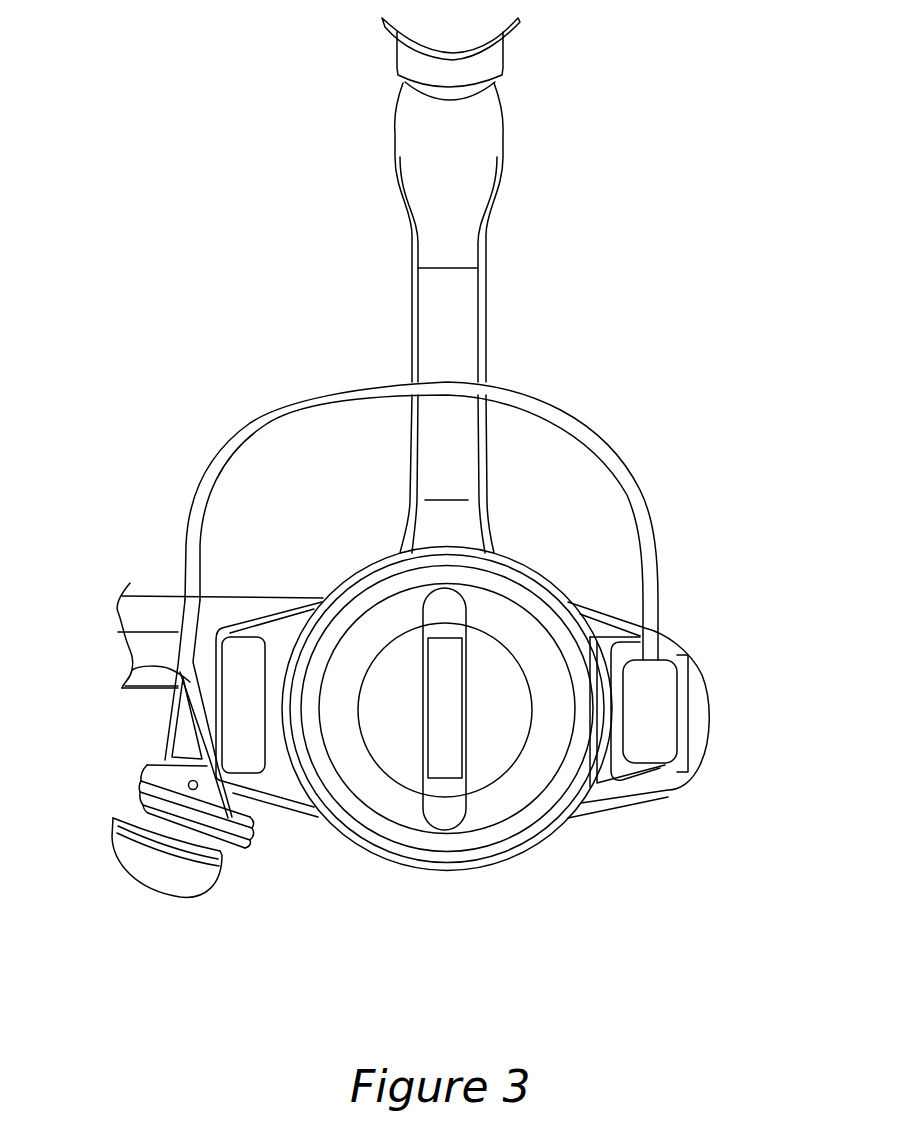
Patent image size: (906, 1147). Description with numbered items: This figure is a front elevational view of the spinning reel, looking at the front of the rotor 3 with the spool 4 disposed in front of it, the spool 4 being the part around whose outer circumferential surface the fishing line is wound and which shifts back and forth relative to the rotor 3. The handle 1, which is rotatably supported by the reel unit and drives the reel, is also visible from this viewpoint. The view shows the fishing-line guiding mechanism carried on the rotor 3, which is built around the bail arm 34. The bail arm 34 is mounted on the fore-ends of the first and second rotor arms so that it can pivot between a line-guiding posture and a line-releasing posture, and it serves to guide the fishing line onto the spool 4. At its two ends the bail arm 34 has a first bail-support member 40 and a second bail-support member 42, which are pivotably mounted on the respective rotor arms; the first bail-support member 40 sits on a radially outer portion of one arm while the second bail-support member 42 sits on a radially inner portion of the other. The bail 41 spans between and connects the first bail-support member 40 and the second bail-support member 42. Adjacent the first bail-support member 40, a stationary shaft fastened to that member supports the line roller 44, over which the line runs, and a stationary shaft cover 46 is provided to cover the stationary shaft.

The handle 1 is at (140, 596).
The rotor 3 is at (660, 790).
The spool 4 is at (387, 832).
The bail arm 34 is at (150, 890).
The first bail-support member 40 is at (132, 670).
The bail 41 is at (610, 460).
The second bail-support member 42 is at (657, 698).
The line roller 44 is at (118, 815).
The stationary shaft cover 46 is at (138, 770).